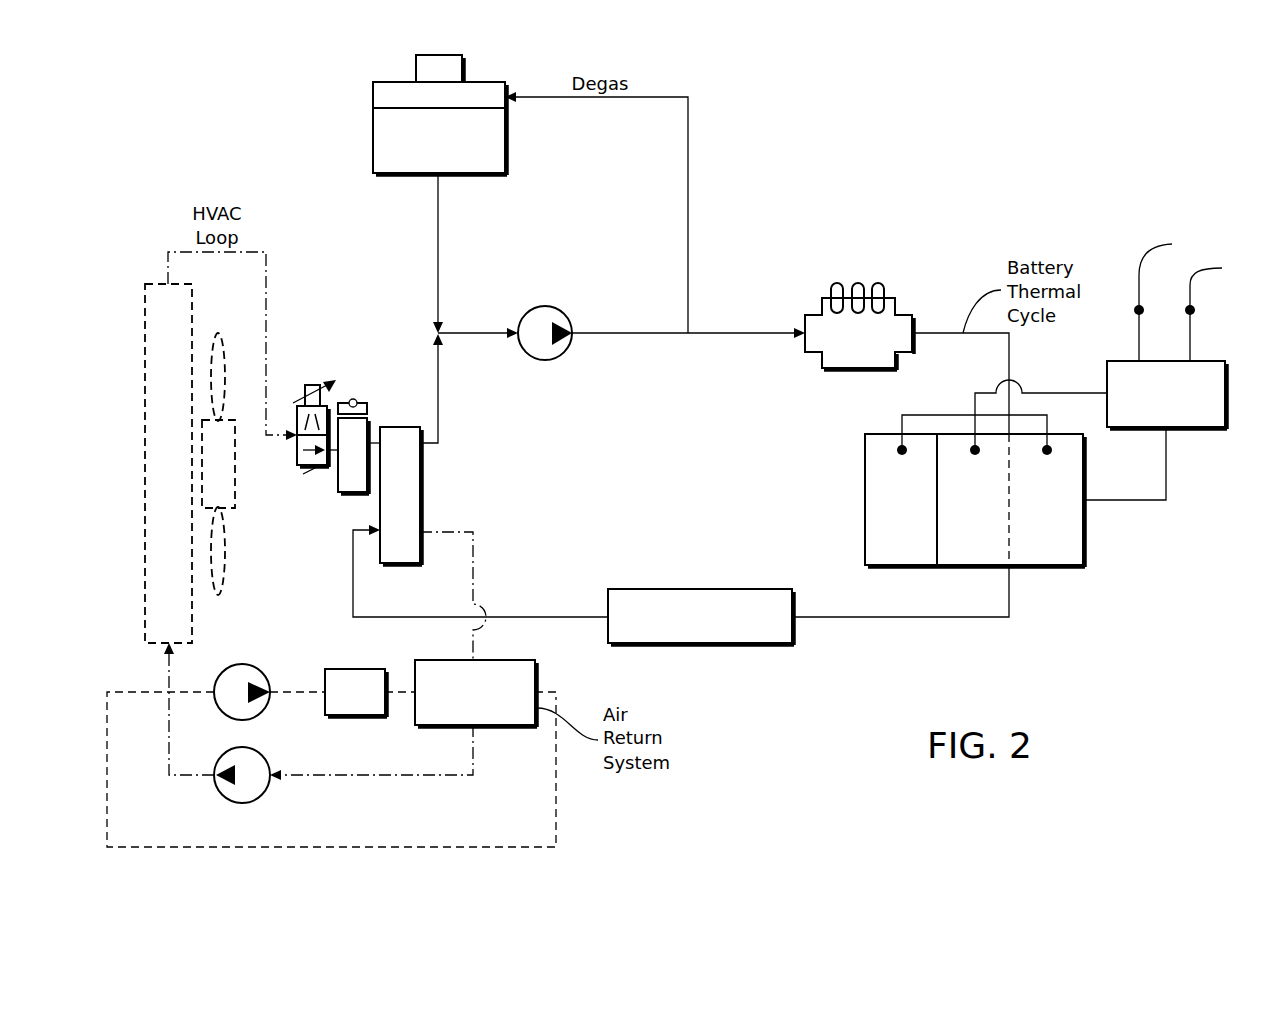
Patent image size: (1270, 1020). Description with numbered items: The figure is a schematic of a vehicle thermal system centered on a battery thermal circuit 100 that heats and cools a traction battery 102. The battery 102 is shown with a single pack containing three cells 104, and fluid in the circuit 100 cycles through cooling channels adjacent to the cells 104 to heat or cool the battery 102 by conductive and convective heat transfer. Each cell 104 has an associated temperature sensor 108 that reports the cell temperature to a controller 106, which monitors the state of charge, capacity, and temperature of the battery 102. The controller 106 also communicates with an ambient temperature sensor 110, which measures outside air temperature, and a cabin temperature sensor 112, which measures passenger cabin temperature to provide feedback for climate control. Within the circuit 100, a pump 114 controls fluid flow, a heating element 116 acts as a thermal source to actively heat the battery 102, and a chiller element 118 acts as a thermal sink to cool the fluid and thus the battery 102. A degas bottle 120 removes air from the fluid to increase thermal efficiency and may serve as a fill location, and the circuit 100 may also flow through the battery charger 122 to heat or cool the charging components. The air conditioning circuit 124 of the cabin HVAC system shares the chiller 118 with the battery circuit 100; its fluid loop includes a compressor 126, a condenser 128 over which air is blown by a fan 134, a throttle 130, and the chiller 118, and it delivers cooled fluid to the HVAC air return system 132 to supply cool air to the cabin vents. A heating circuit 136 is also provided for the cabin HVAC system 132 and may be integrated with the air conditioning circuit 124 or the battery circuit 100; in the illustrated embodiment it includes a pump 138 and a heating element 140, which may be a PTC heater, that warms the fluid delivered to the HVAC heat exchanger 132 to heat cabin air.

The battery thermal circuit 100 is at (900, 617).
The traction battery 102 is at (946, 513).
The battery cell 104 is at (865, 500).
The controller 106 is at (1193, 427).
The temperature sensor 108 is at (900, 450).
The ambient temperature sensor 110 is at (1173, 298).
The cabin temperature sensor 112 is at (1224, 310).
The pump 114 is at (547, 306).
The heating element 116 is at (826, 298).
The chiller element 118 is at (420, 493).
The degas bottle 120 is at (373, 95).
The battery charger 122 is at (698, 589).
The air conditioning circuit 124 is at (473, 750).
The compressor 126 is at (242, 747).
The condenser 128 is at (160, 283).
The throttle 130 is at (353, 399).
The HVAC air return system 132 is at (537, 678).
The fan 134 is at (235, 462).
The heating circuit 136 is at (343, 847).
The pump 138 is at (242, 664).
The heating element 140 is at (355, 669).